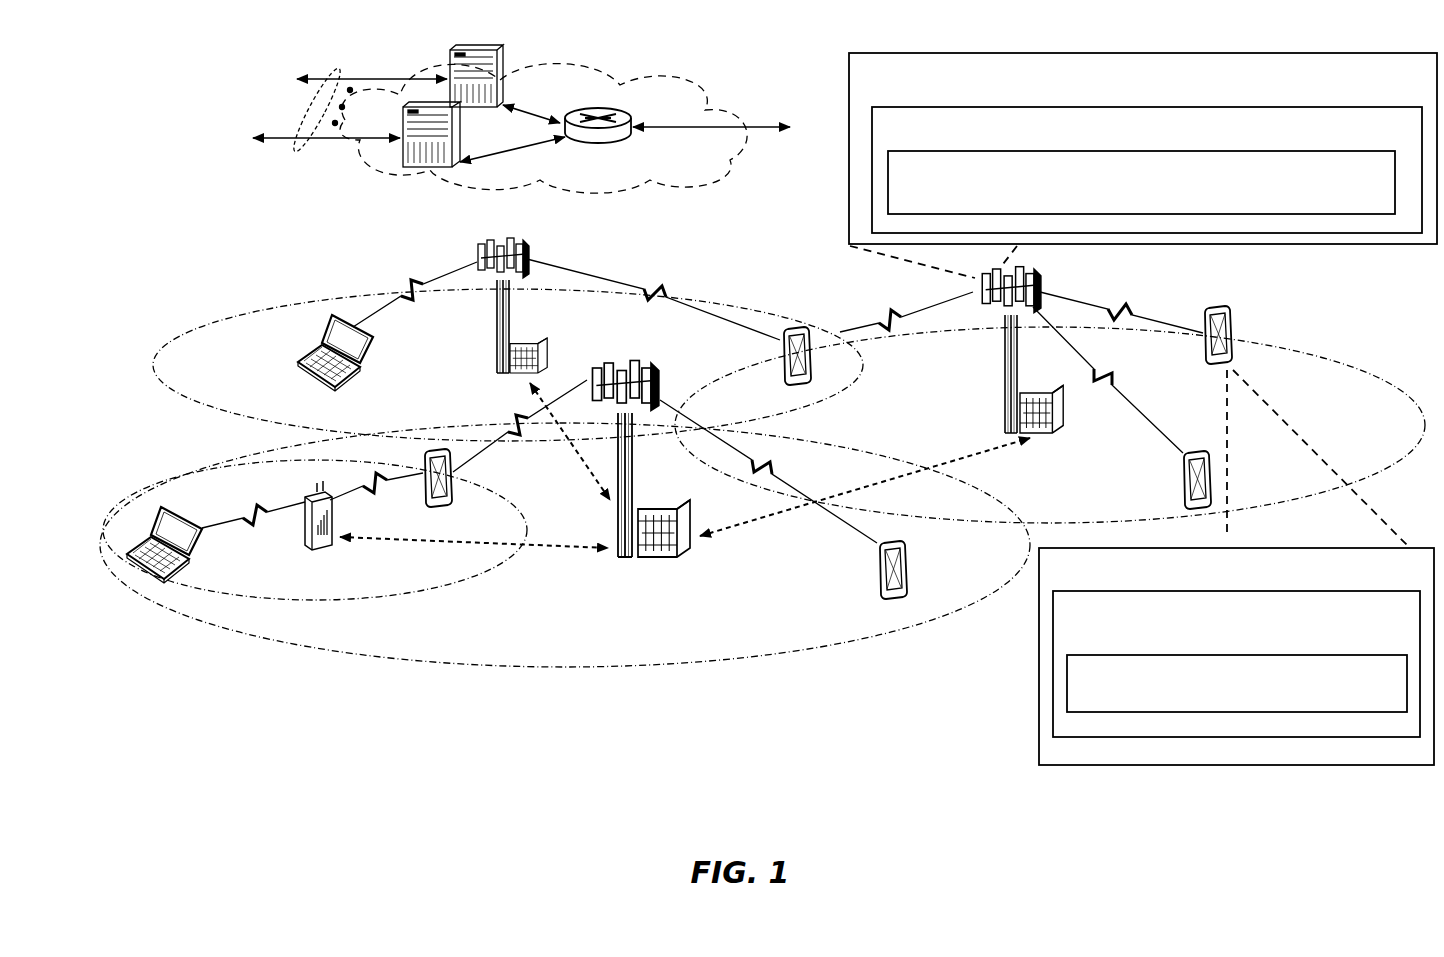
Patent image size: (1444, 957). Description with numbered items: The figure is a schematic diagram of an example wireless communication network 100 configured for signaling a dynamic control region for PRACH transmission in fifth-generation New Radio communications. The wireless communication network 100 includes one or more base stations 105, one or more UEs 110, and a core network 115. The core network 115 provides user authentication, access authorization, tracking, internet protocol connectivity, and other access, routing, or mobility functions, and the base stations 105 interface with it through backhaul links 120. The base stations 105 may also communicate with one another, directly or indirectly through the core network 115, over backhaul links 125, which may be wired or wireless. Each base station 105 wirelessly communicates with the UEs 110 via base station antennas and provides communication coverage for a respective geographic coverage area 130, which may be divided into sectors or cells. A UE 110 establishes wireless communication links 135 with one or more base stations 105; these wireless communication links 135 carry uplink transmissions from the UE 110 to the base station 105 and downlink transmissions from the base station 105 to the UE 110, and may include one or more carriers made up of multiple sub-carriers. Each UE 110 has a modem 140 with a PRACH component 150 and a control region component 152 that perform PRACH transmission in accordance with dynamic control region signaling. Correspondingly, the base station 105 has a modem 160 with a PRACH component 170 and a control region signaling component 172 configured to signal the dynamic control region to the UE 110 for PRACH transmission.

The wireless communication network 100 is at (130, 84).
The base station 105 is at (497, 343).
The user equipment (UE) 110 is at (352, 377).
The core network 115 is at (633, 182).
The backhaul links 120 is at (307, 145).
The backhaul links 125 is at (584, 470).
The geographic coverage area 130 is at (216, 425).
The wireless communication links 135 is at (418, 285).
The modem 140 is at (1236, 567).
The PRACH component 150 is at (1236, 664).
The control region component 152 is at (1237, 683).
The modem 160 is at (1143, 165).
The PRACH component 170 is at (1147, 170).
The control region signaling component 172 is at (1141, 182).